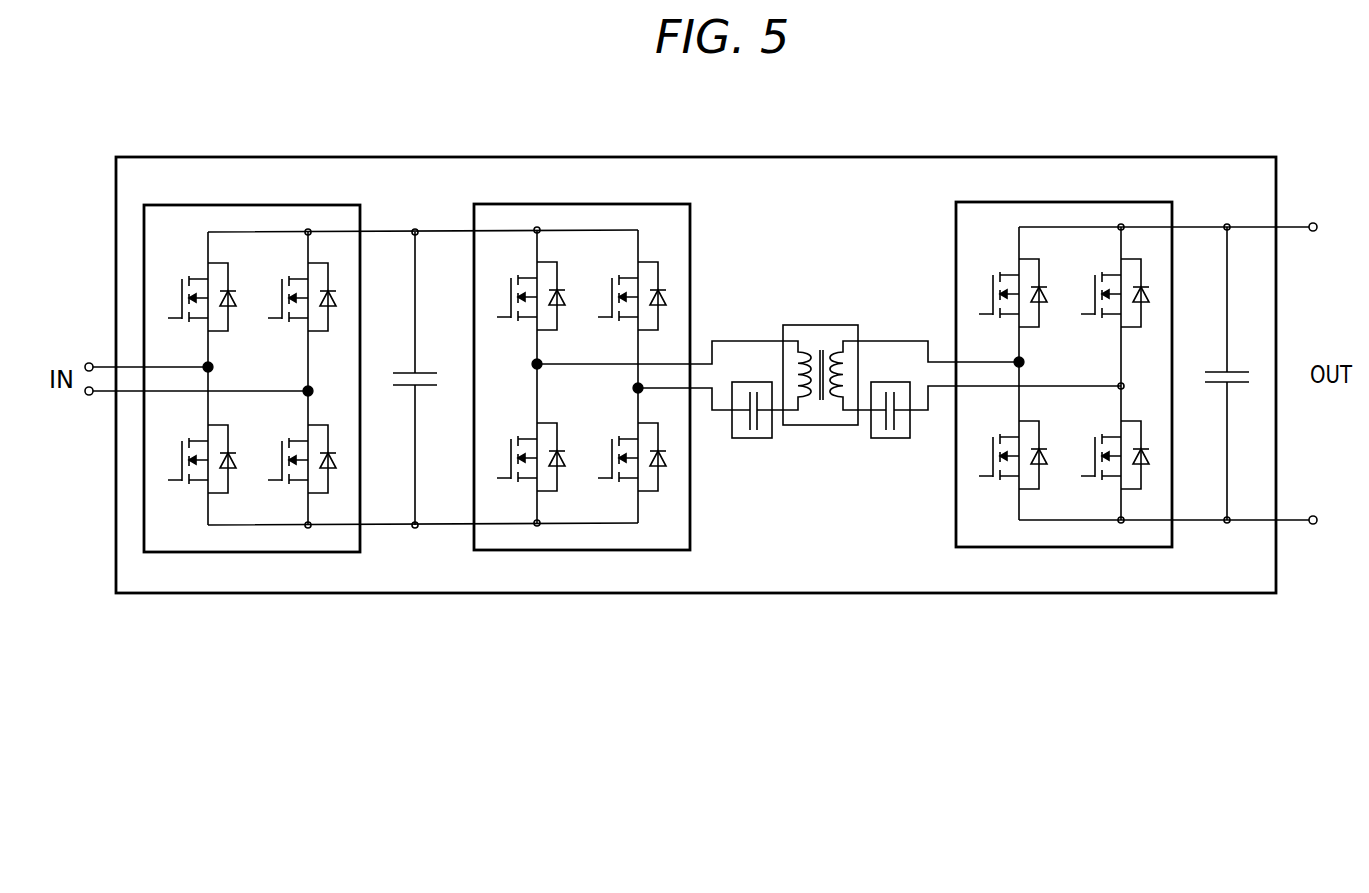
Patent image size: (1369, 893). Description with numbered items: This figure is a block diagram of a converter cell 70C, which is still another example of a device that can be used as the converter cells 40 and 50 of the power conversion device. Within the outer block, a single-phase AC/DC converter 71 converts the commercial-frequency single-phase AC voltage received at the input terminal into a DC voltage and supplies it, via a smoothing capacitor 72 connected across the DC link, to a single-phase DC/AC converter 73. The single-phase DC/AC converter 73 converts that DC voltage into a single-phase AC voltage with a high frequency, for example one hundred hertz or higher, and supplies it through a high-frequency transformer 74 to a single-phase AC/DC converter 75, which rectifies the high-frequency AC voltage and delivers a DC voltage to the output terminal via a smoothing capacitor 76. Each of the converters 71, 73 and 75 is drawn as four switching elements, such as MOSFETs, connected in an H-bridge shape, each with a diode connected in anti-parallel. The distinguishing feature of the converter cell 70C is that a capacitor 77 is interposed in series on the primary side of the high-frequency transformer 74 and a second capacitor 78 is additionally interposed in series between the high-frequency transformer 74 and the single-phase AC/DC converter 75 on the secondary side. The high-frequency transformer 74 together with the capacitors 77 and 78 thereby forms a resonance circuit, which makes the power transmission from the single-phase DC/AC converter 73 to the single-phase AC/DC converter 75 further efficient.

The converter cell 40 is at (696, 357).
The converter cell 50 is at (696, 357).
The converter cell 70C is at (783, 157).
The single-phase AC/DC converter 71 is at (251, 205).
The smoothing capacitor 72 is at (403, 388).
The single-phase DC/AC converter 73 is at (578, 204).
The high-frequency transformer 74 is at (822, 325).
The single-phase AC/DC converter 75 is at (1064, 202).
The smoothing capacitor 76 is at (1215, 383).
The capacitor 77 is at (750, 440).
The capacitor 78 is at (890, 440).